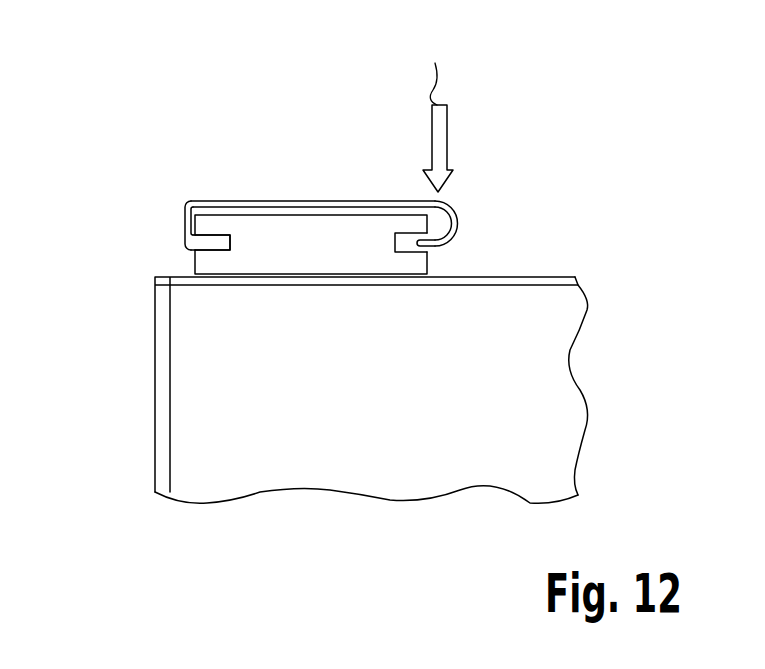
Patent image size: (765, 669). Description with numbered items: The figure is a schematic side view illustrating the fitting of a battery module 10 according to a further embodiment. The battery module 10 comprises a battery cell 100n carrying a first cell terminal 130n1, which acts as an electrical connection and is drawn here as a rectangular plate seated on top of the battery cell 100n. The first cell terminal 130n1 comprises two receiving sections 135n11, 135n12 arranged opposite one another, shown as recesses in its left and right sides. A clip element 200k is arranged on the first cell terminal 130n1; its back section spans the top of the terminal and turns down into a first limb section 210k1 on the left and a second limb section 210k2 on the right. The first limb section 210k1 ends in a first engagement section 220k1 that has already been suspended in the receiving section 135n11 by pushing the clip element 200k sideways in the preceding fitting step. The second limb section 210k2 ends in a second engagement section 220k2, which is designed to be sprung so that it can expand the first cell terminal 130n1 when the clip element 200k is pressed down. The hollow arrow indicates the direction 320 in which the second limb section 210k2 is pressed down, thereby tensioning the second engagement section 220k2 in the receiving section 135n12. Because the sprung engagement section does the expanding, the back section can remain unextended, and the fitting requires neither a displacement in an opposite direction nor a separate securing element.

The battery module 10 is at (298, 88).
The battery cell 100n is at (365, 460).
The first cell terminal 130n1 is at (337, 235).
The receiving section 135n11 is at (213, 245).
The receiving section 135n12 is at (410, 250).
The clip element 200k is at (260, 200).
The first limb section 210k1 is at (190, 207).
The second limb section 210k2 is at (457, 208).
The first engagement section 220k1 is at (191, 238).
The second engagement section 220k2 is at (456, 242).
The direction 320 is at (437, 107).